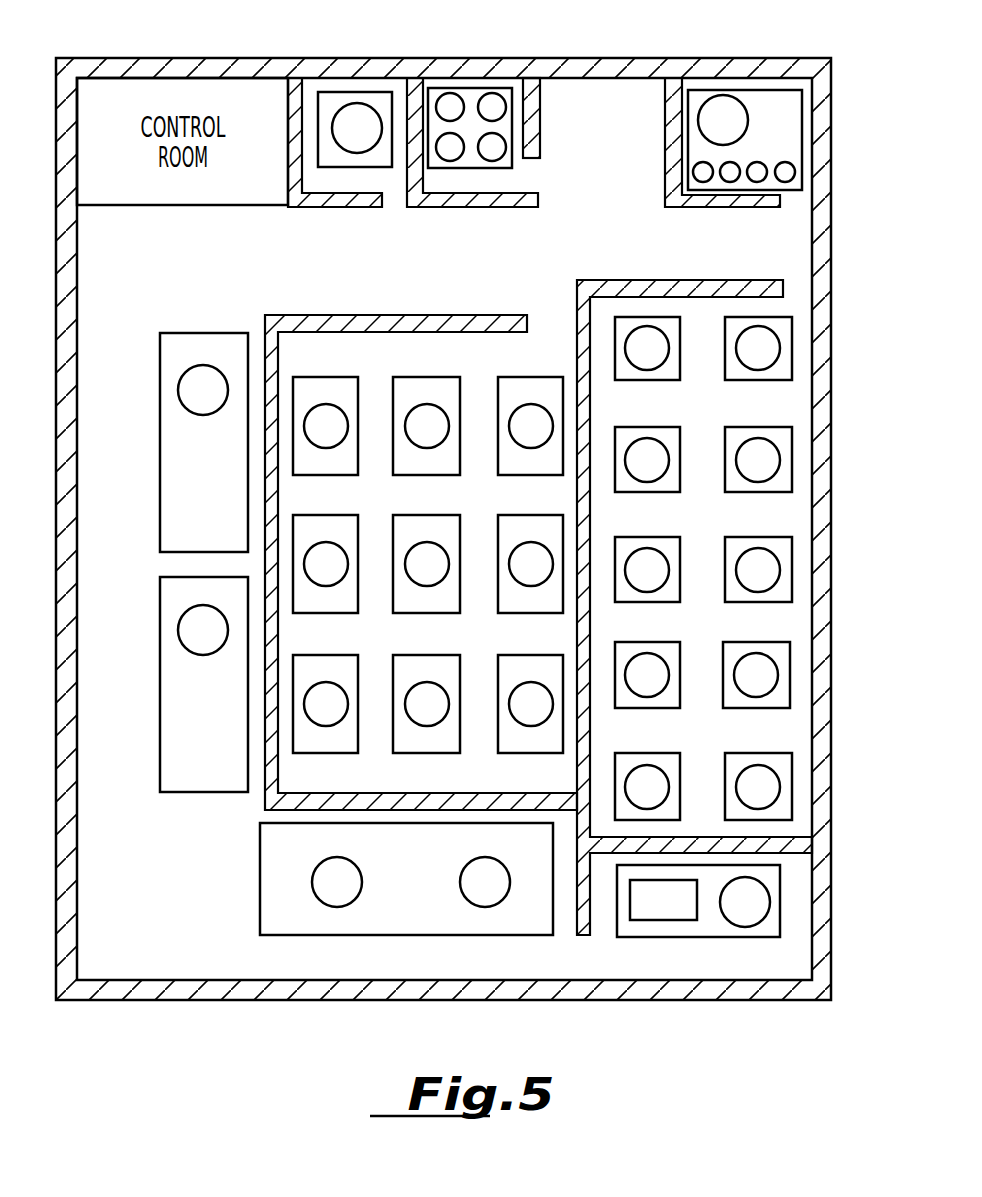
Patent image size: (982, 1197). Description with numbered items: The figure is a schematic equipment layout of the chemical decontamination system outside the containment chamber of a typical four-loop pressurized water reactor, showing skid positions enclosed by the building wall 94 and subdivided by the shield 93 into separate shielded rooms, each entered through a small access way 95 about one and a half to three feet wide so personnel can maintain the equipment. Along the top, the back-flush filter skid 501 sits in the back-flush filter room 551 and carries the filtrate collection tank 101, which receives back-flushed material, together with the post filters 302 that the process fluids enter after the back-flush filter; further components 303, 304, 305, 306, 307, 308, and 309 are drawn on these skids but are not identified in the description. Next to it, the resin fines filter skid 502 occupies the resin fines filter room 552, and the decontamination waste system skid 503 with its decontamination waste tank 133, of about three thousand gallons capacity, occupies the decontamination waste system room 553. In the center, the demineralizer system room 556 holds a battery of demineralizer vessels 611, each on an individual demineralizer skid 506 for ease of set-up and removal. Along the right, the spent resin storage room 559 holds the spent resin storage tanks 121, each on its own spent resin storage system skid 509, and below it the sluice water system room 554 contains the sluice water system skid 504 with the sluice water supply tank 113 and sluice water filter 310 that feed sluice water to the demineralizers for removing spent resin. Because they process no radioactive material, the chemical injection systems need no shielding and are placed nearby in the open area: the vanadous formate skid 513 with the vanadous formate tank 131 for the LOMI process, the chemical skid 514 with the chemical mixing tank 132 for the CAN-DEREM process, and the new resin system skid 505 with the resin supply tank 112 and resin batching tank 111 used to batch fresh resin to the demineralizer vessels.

The shield 93 is at (540, 128).
The building wall 94 is at (443, 992).
The access way 95 is at (533, 178).
The filtrate collection tank 101 is at (723, 120).
The resin batching tank 111 is at (485, 882).
The resin supply tank 112 is at (337, 882).
The sluice water supply tank 113 is at (745, 902).
The spent resin storage tanks 121 is at (702, 567).
The vanadous formate tank 131 is at (203, 390).
The chemical mixing tank 132 is at (203, 630).
The decontamination waste tank 133 is at (357, 128).
The post filters 302 is at (698, 170).
The terminal 303 is at (727, 178).
The terminal 304 is at (753, 180).
The terminal 305 is at (782, 180).
The terminal 306 is at (448, 150).
The terminal 307 is at (447, 103).
The terminal 308 is at (493, 150).
The terminal 309 is at (490, 103).
The sluice water filter 310 is at (663, 900).
The back-flush filter skid 501 is at (778, 102).
The resin fines filter skid 502 is at (510, 93).
The decontamination waste system skid 503 is at (333, 97).
The sluice water system skid 504 is at (712, 927).
The new resin system skid 505 is at (268, 895).
The demineralizer skid 506 is at (518, 383).
The spent resin storage system skid 509 is at (735, 375).
The vanadous formate skid 513 is at (220, 338).
The chemical skid 514 is at (163, 615).
The back-flush filter room 551 is at (748, 136).
The resin fines filter room 552 is at (487, 132).
The decontamination waste system room 553 is at (312, 136).
The sluice water system room 554 is at (698, 955).
The demineralizer system room 556 is at (371, 580).
The spent resin storage room 559 is at (732, 607).
The demineralizer vessels 611 is at (428, 565).